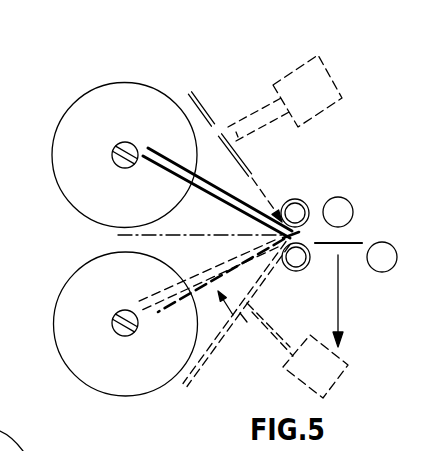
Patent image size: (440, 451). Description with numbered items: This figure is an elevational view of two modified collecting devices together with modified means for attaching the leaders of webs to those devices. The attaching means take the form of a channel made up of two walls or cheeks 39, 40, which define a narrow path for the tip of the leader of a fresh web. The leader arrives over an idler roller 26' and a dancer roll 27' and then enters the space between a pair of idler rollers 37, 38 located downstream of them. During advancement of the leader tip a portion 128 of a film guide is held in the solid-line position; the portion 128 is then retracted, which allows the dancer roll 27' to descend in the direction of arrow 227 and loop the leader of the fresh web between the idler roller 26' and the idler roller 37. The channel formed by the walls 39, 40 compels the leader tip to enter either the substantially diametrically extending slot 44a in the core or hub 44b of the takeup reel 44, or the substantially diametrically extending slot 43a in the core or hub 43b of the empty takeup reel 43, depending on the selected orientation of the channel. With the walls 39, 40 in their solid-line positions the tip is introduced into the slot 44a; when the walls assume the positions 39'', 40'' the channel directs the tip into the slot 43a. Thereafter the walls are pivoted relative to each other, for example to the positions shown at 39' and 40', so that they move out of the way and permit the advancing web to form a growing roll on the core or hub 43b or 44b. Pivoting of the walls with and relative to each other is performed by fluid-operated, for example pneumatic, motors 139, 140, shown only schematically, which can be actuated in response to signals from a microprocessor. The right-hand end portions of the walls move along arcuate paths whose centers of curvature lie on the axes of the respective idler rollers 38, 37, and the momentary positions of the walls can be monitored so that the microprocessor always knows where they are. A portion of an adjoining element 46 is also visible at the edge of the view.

The takeup reel 44 is at (92, 207).
The slot 44a is at (118, 148).
The core or hub 44b is at (118, 160).
The takeup reel 43 is at (95, 272).
The slot 43a is at (115, 330).
The core or hub 43b is at (120, 338).
The wall 40 is at (210, 193).
The pivoted position of wall 40' is at (238, 314).
The position of wall 40'' is at (212, 305).
The wall 39 is at (235, 157).
The pivoted position of wall 39' is at (253, 117).
The position of wall 39'' is at (145, 275).
The fluid-operated motor 139 is at (285, 58).
The fluid-operated motor 140 is at (340, 393).
The idler roller 38 is at (294, 199).
The idler roller 37 is at (297, 271).
The dancer roll 27' is at (359, 190).
The idler roller 26' is at (382, 284).
The portion of film guide 128 is at (350, 243).
The arrow 227 is at (340, 312).
The drum 46 is at (67, 441).